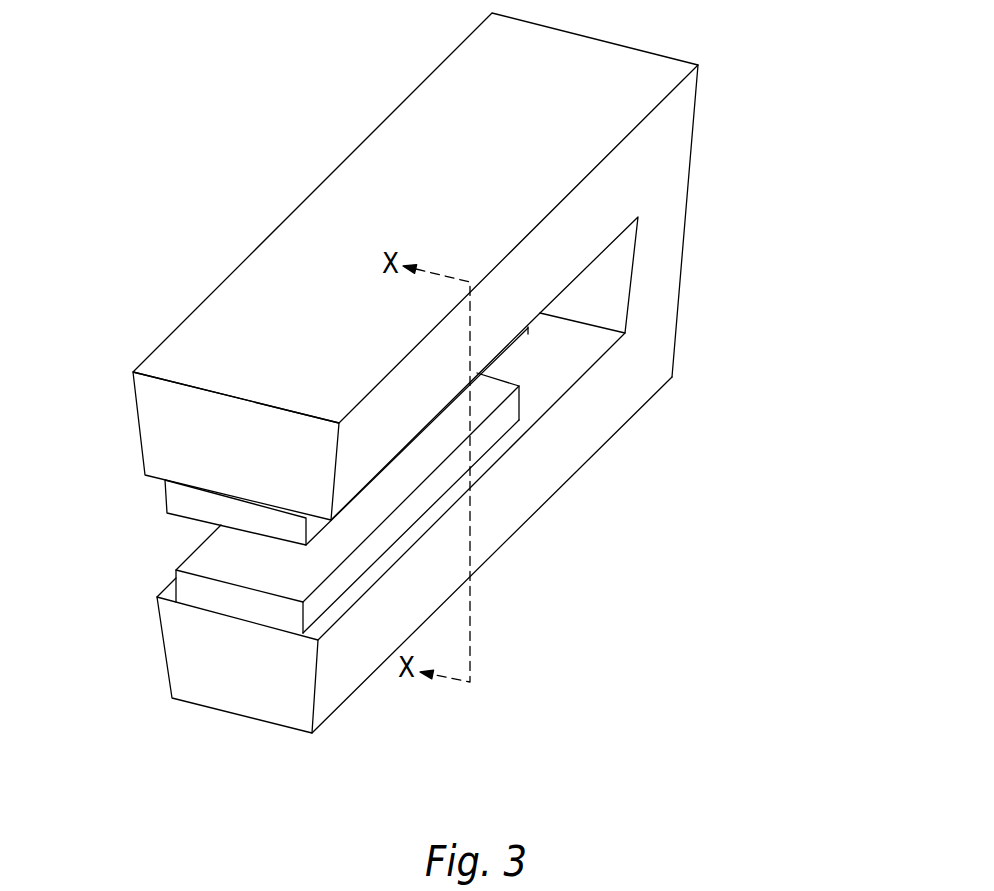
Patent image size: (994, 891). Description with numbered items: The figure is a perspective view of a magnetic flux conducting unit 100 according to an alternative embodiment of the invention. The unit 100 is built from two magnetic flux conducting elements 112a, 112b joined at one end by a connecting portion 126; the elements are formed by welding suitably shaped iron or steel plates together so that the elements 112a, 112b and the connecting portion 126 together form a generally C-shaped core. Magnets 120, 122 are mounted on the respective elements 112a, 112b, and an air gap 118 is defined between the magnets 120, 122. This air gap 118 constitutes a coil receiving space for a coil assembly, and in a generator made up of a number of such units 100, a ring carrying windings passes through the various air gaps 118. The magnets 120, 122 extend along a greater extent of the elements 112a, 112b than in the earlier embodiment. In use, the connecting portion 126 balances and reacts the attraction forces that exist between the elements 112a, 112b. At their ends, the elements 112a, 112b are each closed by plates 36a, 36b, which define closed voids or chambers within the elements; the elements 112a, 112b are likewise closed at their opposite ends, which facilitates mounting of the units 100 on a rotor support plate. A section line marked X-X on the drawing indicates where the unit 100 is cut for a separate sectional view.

The magnetic flux conducting unit 100 is at (484, 373).
The connecting portion 126 is at (660, 285).
The magnetic flux conducting element 112a is at (303, 267).
The magnetic flux conducting element 112b is at (530, 481).
The air gap 118 is at (285, 480).
The magnet 120 is at (180, 500).
The magnet 122 is at (187, 591).
The plate 36a is at (265, 461).
The plate 36b is at (268, 687).